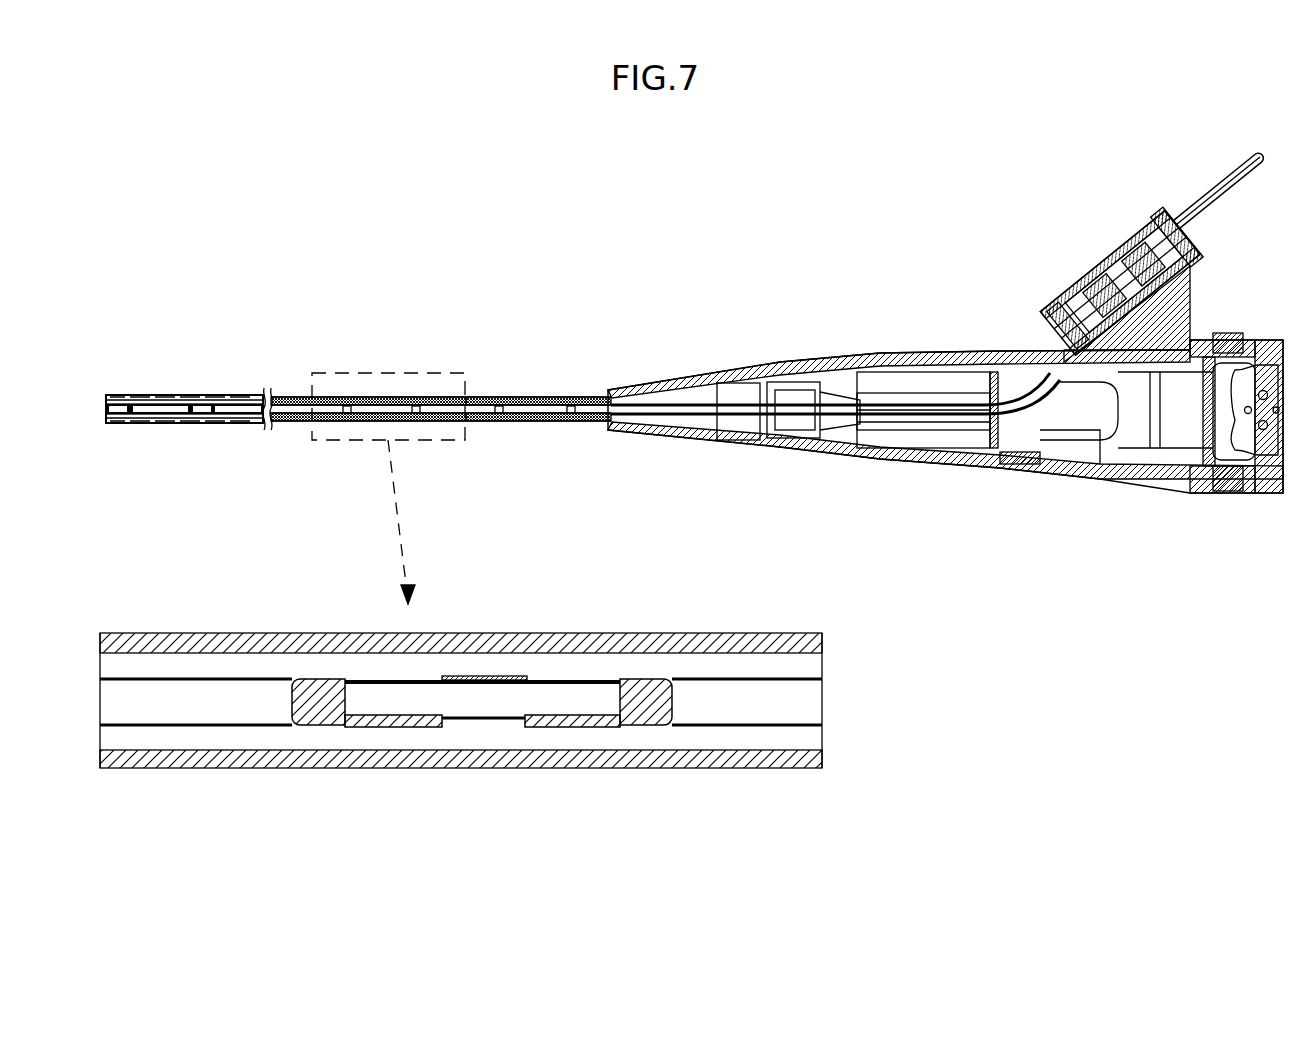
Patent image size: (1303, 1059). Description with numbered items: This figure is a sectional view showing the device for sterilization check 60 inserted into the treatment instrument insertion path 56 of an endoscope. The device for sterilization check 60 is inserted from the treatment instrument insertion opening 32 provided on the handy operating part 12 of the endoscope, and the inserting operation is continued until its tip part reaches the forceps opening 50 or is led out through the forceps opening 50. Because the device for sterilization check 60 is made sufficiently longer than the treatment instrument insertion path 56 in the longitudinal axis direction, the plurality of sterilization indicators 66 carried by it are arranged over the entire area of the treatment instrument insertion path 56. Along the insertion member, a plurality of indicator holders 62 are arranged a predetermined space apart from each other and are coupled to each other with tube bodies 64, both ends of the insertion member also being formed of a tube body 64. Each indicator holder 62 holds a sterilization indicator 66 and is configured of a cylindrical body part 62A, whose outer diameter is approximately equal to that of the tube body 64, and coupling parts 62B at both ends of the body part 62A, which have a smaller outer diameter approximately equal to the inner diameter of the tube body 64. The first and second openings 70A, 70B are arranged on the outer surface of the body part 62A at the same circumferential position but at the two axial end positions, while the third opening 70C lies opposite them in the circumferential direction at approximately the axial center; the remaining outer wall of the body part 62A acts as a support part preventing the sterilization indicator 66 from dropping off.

The handy operating part 12 is at (917, 333).
The treatment instrument insertion opening 32 is at (1208, 243).
The forceps opening 50 is at (100, 408).
The treatment instrument insertion path 56 is at (245, 395).
The device for sterilization check 60 is at (1200, 180).
The indicator holder 62 is at (412, 395).
The body part 62A is at (598, 729).
The coupling part 62B is at (320, 718).
The tube body 64 is at (514, 396).
The sterilization indicator 66 is at (366, 396).
The first opening 70A is at (377, 673).
The second opening 70B is at (601, 673).
The third opening 70C is at (461, 730).